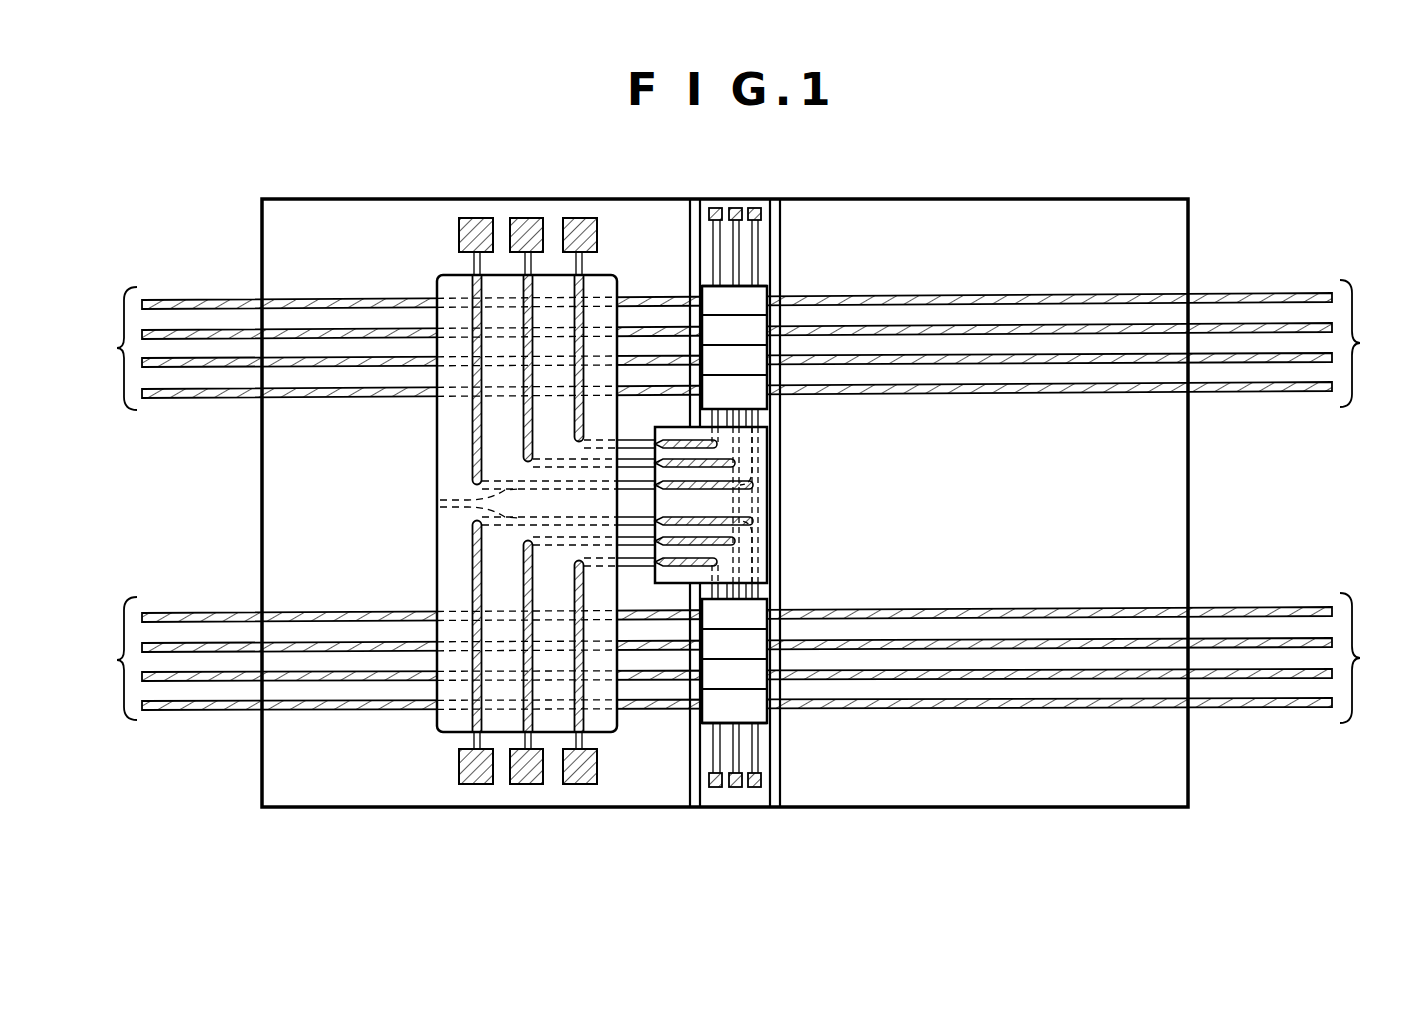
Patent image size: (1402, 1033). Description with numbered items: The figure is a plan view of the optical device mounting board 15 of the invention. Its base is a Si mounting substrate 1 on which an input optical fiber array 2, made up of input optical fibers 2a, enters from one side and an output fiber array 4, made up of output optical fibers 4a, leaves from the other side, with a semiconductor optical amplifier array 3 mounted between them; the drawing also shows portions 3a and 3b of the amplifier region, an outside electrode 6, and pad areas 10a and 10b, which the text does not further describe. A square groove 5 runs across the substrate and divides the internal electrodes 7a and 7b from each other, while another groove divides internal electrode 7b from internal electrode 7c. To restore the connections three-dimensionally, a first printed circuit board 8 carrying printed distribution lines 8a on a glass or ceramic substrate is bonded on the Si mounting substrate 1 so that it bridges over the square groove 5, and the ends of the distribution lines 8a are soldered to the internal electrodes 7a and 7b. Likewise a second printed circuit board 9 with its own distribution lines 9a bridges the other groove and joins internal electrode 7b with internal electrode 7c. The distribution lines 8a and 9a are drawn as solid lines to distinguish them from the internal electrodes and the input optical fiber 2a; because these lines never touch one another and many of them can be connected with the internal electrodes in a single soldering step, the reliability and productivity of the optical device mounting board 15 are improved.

The Si mounting substrate 1 is at (1105, 795).
The input optical fiber array 2 is at (411, 503).
The input optical fiber 2a is at (200, 298).
The semiconductor optical amplifier array 3 is at (696, 282).
The connection portion 3a is at (745, 285).
The contact terminal 3b is at (745, 455).
The output fiber array 4 is at (1060, 501).
The output optical fiber 4a is at (1267, 293).
The square groove 5 is at (693, 795).
The outside electrode 6 is at (770, 240).
The internal electrode 7a is at (765, 413).
The internal electrode 7b is at (436, 503).
The internal electrode 7c is at (474, 262).
The first printed circuit board 8 is at (776, 512).
The distribution lines 8a is at (727, 493).
The second printed circuit board 9 is at (437, 432).
The distribution lines 9a is at (473, 318).
The small electrode pad 10a is at (722, 207).
The electrode pad 10b is at (484, 218).
The optical device mounting board 15 is at (1078, 186).